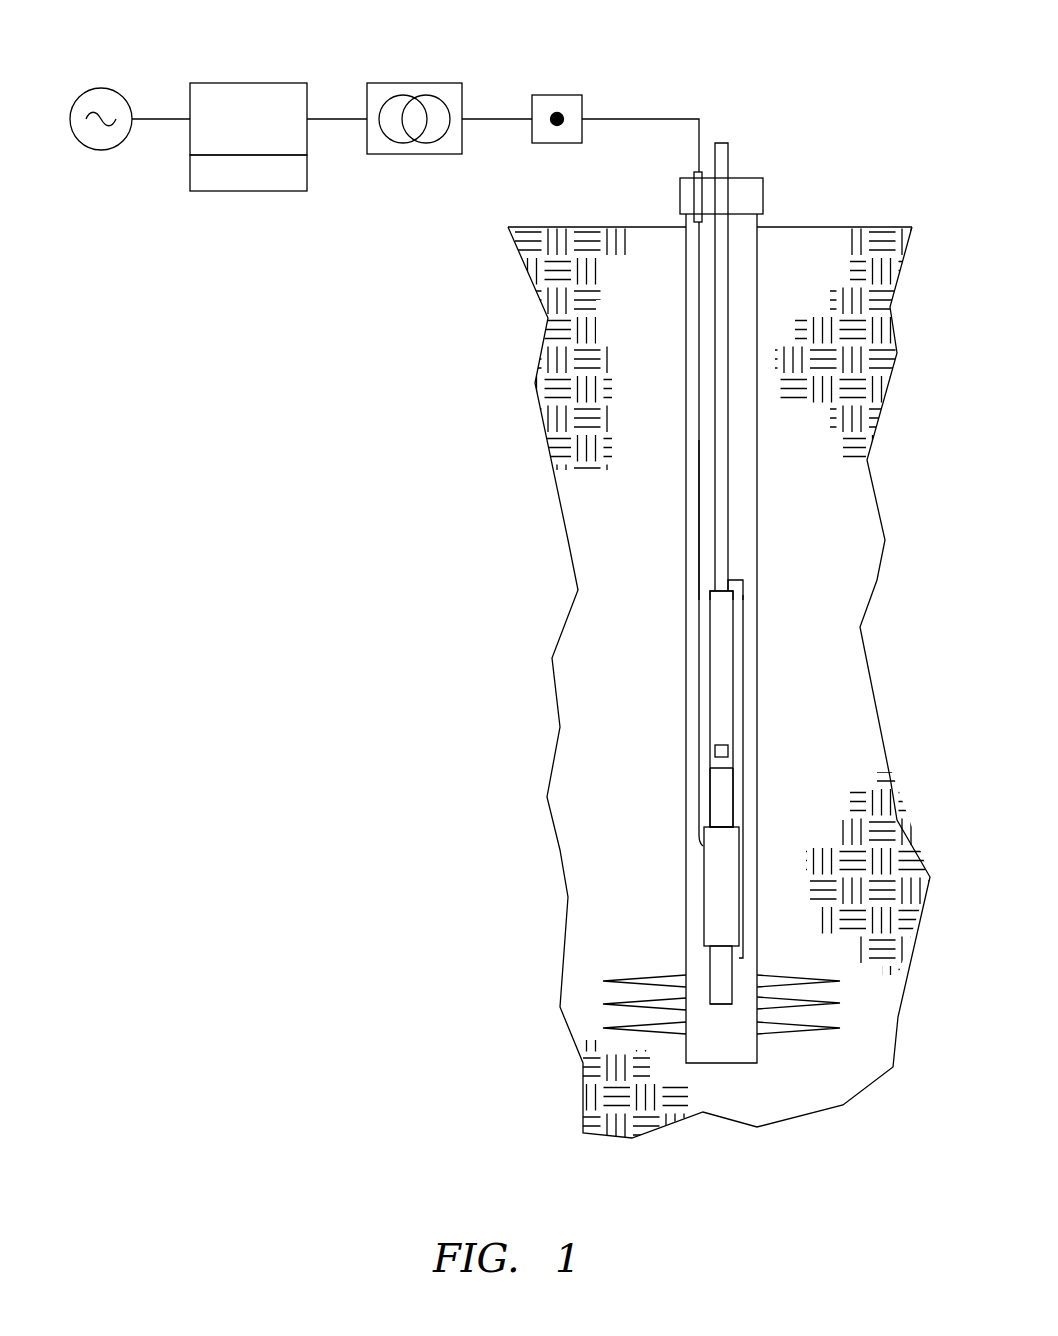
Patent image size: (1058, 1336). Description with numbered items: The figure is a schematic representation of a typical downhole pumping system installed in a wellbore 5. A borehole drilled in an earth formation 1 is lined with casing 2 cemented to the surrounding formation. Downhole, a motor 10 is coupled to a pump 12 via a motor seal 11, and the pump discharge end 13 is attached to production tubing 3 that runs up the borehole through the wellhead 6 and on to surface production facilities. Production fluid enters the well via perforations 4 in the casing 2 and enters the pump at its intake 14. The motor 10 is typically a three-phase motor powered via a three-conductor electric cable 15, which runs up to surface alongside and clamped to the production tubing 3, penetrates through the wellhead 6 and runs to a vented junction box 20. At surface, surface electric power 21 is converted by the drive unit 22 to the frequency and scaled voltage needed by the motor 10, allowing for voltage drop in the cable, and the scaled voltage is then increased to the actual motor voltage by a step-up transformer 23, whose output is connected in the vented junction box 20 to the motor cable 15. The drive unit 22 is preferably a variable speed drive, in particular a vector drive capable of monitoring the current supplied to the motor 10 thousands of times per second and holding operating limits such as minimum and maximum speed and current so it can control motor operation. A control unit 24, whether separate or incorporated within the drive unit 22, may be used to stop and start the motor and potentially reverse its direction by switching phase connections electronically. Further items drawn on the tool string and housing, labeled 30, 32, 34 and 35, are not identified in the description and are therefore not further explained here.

The earth formation 1 is at (528, 258).
The casing 2 is at (685, 337).
The production tubing 3 is at (713, 392).
The perforations 4 is at (648, 1000).
The wellbore 5 is at (741, 272).
The wellhead 6 is at (763, 196).
The motor 10 is at (705, 880).
The motor seal 11 is at (710, 793).
The pump 12 is at (710, 682).
The pump discharge end 13 is at (710, 592).
The intake 14 is at (715, 750).
The electric cable 15 is at (698, 510).
The vented junction box 20 is at (560, 95).
The surface electric power 21 is at (116, 88).
The drive unit 22 is at (250, 83).
The step-up transformer 23 is at (410, 83).
The control unit 24 is at (244, 191).
The probe 30 is at (713, 958).
The probe tip 32 is at (720, 995).
The housing wall 34 is at (743, 723).
The housing top 35 is at (728, 580).